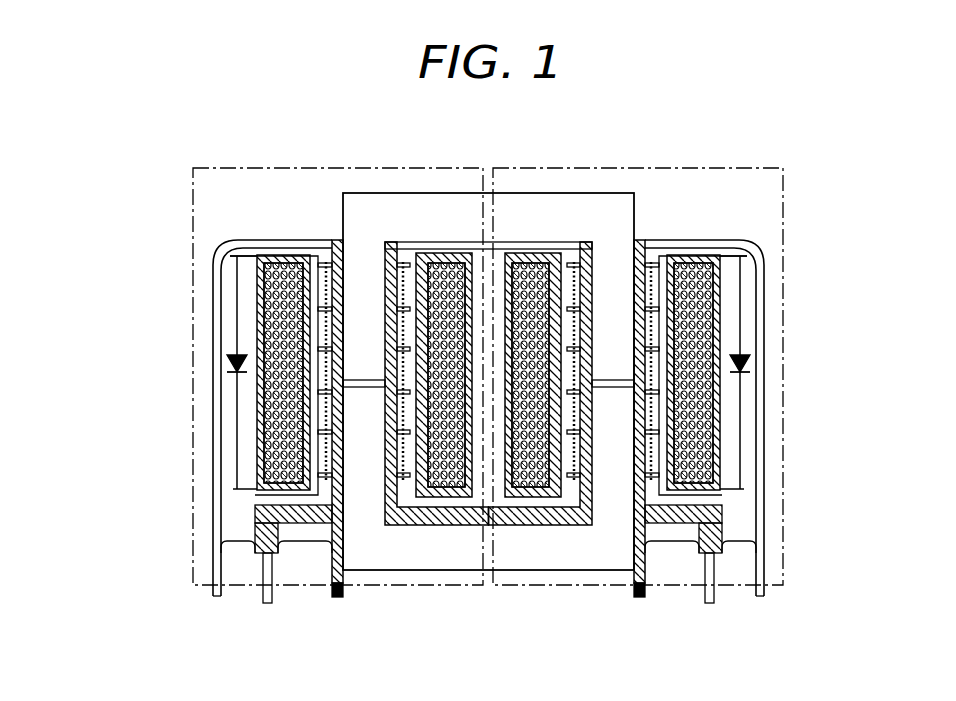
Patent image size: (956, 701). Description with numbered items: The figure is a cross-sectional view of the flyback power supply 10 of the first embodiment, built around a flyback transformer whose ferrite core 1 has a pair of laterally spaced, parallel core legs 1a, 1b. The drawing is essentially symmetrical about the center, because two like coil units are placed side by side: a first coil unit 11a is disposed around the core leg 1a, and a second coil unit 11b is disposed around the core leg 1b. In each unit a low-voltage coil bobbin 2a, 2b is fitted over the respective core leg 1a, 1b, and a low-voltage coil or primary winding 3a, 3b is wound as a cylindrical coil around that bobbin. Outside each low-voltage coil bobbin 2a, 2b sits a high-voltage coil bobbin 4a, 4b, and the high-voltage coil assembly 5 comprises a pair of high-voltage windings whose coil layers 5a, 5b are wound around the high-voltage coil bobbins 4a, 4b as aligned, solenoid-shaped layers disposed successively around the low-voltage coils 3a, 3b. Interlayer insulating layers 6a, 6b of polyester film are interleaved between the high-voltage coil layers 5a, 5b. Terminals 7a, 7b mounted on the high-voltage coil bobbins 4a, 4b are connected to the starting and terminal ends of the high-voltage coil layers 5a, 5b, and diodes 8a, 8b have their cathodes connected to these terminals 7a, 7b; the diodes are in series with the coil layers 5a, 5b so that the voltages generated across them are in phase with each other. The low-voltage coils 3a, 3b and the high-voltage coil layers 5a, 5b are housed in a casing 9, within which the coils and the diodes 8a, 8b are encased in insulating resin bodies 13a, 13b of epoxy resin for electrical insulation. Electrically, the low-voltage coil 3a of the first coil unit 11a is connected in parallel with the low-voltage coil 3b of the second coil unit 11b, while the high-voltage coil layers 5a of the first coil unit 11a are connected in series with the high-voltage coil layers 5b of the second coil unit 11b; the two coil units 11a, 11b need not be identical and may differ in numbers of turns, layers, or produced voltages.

The core 1 is at (443, 555).
The core leg 1a is at (370, 530).
The core leg 1b is at (610, 530).
The low-voltage coil bobbin 2a is at (337, 598).
The low-voltage coil bobbin 2b is at (640, 598).
The low-voltage coil 3a is at (343, 265).
The low-voltage coil 3b is at (645, 265).
The high-voltage coil bobbin 4a is at (294, 257).
The high-voltage coil bobbin 4b is at (684, 257).
The high-voltage coil assembly 5 is at (504, 239).
The high-voltage coil layers 5a is at (277, 258).
The high-voltage coil layers 5b is at (700, 258).
The interlayer insulating layer 6a is at (245, 256).
The interlayer insulating layer 6b is at (732, 256).
The terminal 7a is at (237, 489).
The terminal 7b is at (740, 489).
The diode 8a is at (233, 372).
The diode 8b is at (744, 372).
The casing 9 is at (213, 268).
The electromagnetic device 10 is at (528, 641).
The first coil unit 11a is at (440, 168).
The second coil unit 11b is at (608, 168).
The insulating resin body 13a is at (228, 322).
The insulating resin body 13b is at (749, 322).